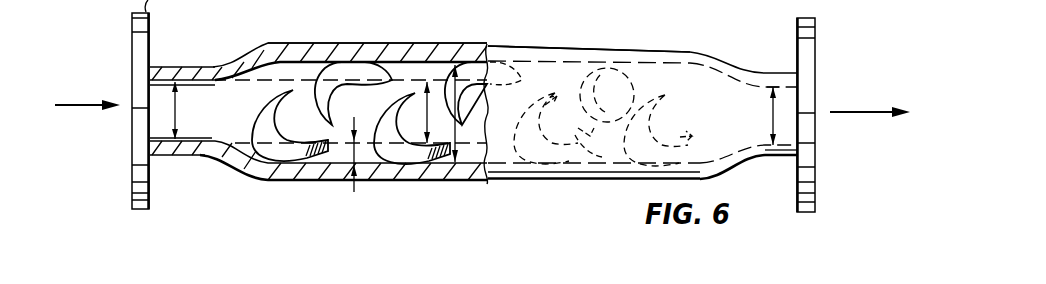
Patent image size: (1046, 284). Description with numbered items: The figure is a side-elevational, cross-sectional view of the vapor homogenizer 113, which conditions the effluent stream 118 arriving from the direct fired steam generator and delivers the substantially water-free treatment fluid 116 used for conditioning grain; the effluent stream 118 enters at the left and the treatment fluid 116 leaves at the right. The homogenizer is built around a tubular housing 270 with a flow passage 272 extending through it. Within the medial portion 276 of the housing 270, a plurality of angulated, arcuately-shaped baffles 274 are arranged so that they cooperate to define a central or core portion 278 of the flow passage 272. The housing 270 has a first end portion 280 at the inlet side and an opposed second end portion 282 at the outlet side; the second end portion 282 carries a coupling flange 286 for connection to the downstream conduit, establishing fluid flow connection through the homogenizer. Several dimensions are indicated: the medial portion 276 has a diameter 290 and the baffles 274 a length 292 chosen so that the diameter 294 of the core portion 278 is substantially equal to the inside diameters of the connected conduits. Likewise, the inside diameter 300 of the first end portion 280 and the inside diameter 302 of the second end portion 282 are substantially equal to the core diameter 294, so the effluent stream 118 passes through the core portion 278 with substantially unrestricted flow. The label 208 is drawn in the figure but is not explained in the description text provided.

The vapor homogenizer 113 is at (703, 42).
The substantially water-free treatment fluid 116 is at (855, 114).
The effluent stream 118 is at (81, 103).
The mixer assembly 208 is at (541, 0).
The tubular housing 270 is at (610, 28).
The flow passage 272 is at (200, 130).
The angulated, arcuately-shaped baffles 274 is at (340, 61).
The medial portion 276 is at (500, 156).
The central or core portion 278 is at (222, 120).
The first end portion 280 is at (185, 65).
The second end portion 282 is at (770, 158).
The coupling flange 286 is at (806, 216).
The diameter of the medial portion 290 is at (452, 90).
The length of the baffles 292 is at (360, 153).
The diameter of the core portion 294 is at (424, 99).
The inside diameter of the first end portion 300 is at (177, 105).
The inside diameter of the second end portion 302 is at (771, 114).